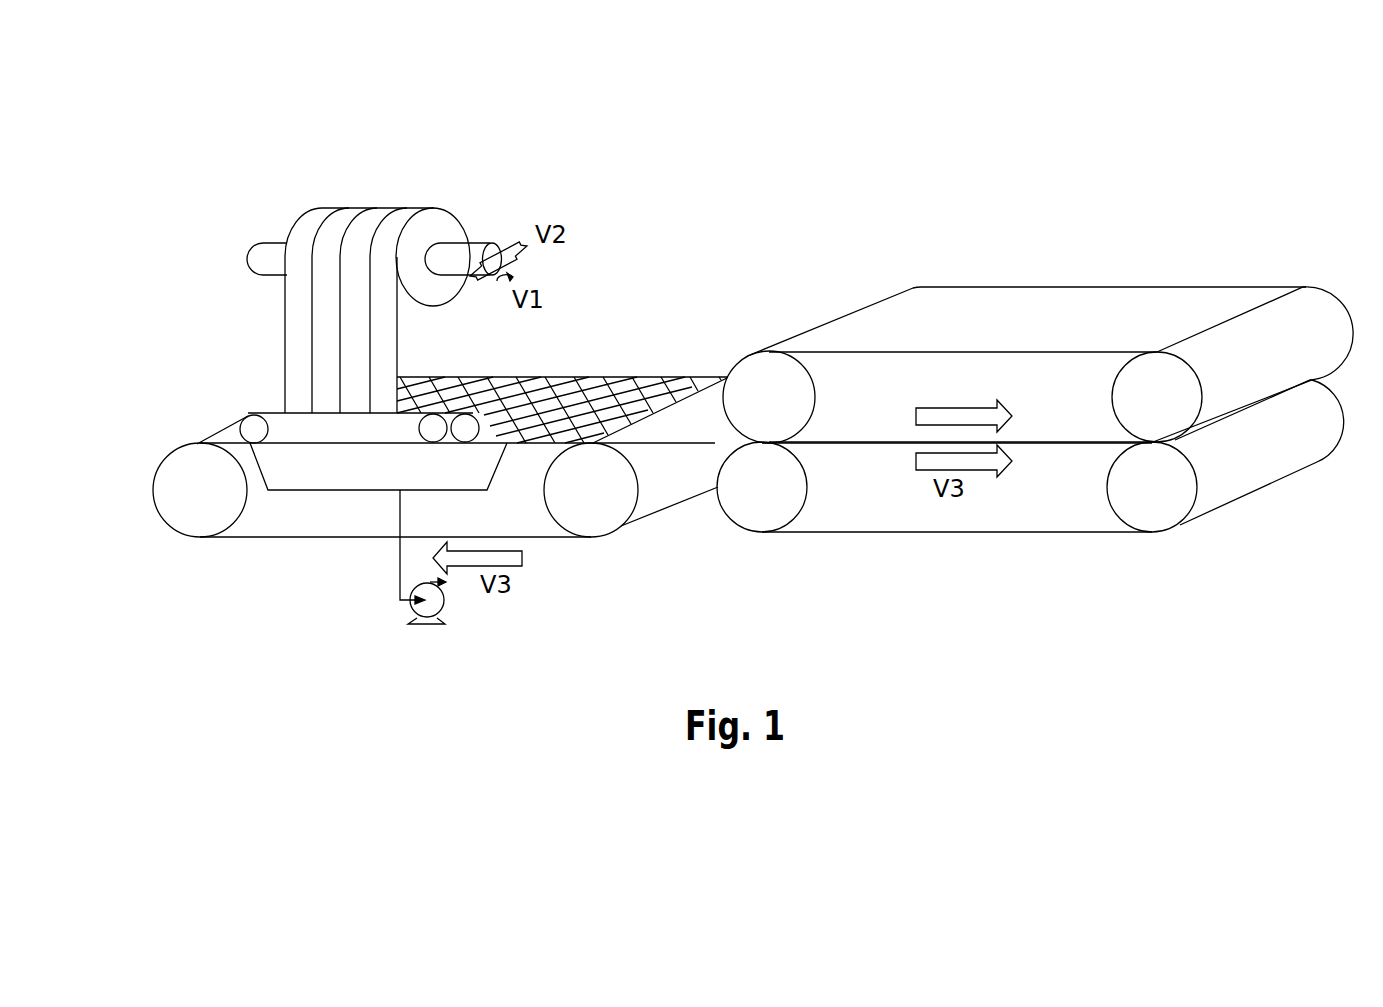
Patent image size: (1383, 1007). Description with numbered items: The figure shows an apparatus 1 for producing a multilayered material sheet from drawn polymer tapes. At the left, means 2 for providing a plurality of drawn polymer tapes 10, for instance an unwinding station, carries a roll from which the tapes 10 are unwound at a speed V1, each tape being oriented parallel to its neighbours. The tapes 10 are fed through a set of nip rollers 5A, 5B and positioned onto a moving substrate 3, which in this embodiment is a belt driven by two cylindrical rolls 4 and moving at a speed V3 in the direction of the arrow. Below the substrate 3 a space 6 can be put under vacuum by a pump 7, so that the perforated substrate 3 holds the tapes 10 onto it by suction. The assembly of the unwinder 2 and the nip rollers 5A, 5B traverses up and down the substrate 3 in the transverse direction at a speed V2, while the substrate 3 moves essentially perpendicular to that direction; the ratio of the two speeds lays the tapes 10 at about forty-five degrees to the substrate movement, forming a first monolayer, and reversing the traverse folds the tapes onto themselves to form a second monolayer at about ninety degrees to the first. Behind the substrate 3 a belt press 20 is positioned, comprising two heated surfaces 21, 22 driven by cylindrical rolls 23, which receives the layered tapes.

The apparatus 1 is at (656, 352).
The means for providing polymer tapes 2 is at (250, 258).
The moving substrate 3 is at (587, 385).
The cylindrical rolls 4 is at (178, 475).
The nip roller 5A is at (427, 430).
The nip roller 5B is at (465, 433).
The space 6 is at (323, 473).
The pump 7 is at (428, 612).
The drawn polymer tapes 10 is at (340, 220).
The belt press 20 is at (1107, 265).
The heated surface 21 is at (908, 318).
The heated surface 22 is at (893, 515).
The cylindrical rolls 23 is at (1313, 315).